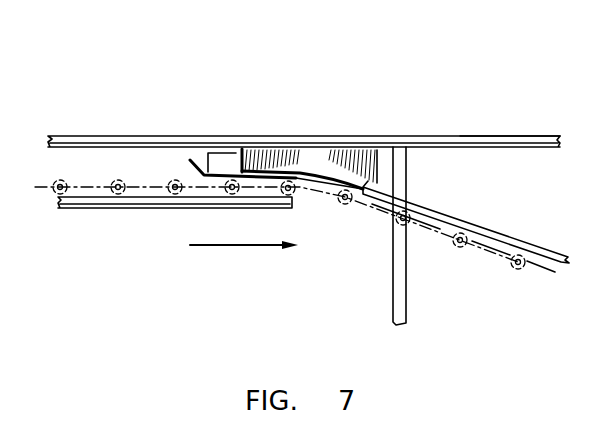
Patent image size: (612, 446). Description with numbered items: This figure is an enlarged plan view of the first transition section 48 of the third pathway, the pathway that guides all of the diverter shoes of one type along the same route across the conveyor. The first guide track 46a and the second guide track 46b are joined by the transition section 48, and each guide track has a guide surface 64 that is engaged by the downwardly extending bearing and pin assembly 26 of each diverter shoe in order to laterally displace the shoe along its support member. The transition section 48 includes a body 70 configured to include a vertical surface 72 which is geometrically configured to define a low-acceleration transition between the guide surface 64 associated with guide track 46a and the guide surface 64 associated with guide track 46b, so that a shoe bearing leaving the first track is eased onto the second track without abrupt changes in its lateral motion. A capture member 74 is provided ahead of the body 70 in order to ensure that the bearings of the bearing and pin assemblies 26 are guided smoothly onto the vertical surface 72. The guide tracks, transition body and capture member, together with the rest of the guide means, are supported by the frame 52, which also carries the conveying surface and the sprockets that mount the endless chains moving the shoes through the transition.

The bearing and pin assembly 26 is at (54, 191).
The first guide track 46a is at (88, 197).
The second guide track 46b is at (487, 222).
The first transition section 48 is at (355, 146).
The frame 52 is at (468, 142).
The guide surface 64 is at (128, 199).
The body 70 is at (290, 170).
The vertical surface 72 is at (332, 183).
The capture member 74 is at (221, 172).